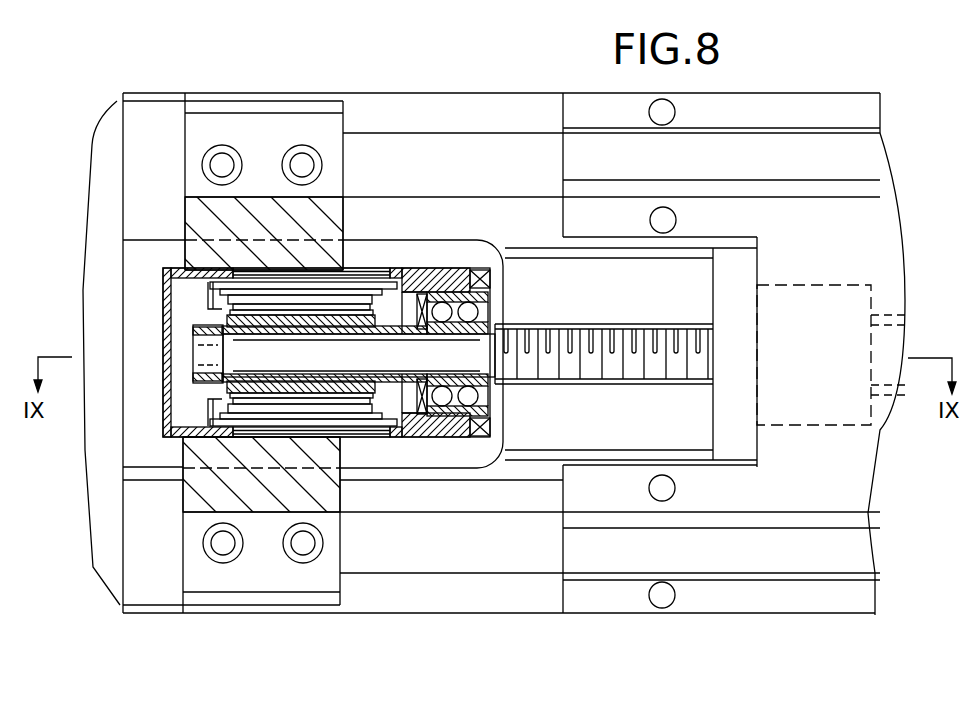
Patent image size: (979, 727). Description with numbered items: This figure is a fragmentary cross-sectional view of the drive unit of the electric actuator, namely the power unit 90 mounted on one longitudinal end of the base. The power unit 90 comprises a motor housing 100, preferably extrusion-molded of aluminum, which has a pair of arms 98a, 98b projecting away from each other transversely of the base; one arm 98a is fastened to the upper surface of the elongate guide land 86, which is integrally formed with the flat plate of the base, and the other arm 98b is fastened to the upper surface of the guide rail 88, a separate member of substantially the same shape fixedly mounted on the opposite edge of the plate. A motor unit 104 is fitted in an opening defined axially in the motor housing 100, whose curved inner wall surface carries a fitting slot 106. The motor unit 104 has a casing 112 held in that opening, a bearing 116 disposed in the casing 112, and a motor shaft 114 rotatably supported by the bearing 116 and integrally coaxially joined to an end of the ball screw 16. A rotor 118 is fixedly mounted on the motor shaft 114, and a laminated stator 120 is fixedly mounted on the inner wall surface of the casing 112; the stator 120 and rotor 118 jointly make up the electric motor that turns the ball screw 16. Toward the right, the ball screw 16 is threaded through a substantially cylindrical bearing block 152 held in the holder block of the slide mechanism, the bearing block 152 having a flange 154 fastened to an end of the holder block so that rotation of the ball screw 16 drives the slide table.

The ball screw 16 is at (593, 372).
The guide land 86 is at (522, 160).
The guide rail 88 is at (527, 558).
The power unit 90 is at (405, 226).
The arm 98a is at (208, 122).
The arm 98b is at (252, 573).
The motor housing 100 is at (193, 220).
The motor unit 104 is at (442, 262).
The fitting slot 106 is at (338, 265).
The casing 112 is at (414, 415).
The motor shaft 114 is at (272, 395).
The bearing 116 is at (450, 415).
The rotor 118 is at (288, 358).
The laminated stator 120 is at (265, 300).
The bearing block 152 is at (812, 425).
The flange 154 is at (747, 270).